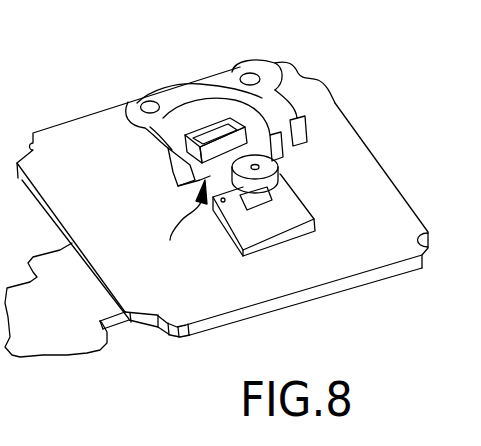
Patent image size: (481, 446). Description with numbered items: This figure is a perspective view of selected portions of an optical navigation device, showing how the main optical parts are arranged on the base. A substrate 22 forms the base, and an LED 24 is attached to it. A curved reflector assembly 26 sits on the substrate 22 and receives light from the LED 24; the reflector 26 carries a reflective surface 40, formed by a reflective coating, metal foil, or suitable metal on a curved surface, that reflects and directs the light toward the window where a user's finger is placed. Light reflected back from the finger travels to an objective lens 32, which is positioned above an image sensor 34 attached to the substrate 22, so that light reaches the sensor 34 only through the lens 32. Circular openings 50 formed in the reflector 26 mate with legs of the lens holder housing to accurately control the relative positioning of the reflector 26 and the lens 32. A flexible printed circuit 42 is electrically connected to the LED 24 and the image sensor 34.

The substrate 22 is at (377, 182).
The LED 24 is at (182, 224).
The curved reflector assembly 26 is at (200, 87).
The objective lens 32 is at (266, 161).
The image sensor 34 is at (297, 216).
The reflective surface 40 is at (260, 127).
The flexible printed circuit 42 is at (82, 338).
The circular openings 50 is at (153, 105).